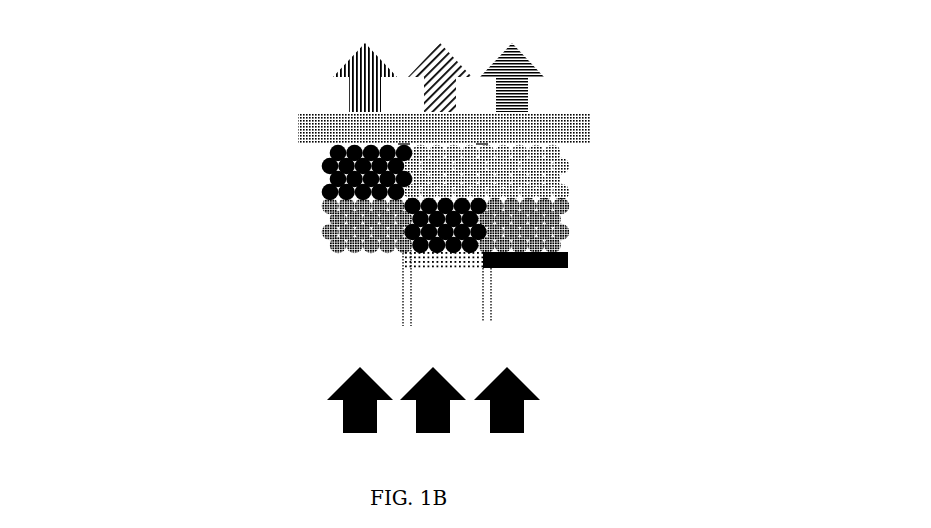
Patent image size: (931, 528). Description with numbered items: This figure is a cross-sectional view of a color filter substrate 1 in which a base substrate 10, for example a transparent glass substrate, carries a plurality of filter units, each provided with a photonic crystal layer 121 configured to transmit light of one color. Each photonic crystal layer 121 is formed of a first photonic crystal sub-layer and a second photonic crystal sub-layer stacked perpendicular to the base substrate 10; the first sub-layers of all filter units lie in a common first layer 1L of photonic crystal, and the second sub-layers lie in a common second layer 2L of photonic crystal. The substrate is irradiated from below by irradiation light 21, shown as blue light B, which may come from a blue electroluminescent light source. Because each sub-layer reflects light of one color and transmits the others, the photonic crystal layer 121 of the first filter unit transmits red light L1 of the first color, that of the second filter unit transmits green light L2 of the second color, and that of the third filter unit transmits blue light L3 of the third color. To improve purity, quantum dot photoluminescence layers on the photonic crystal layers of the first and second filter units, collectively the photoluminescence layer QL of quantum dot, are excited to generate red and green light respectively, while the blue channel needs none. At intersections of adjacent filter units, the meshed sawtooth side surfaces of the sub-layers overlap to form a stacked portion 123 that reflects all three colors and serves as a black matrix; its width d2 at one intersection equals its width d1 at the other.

The color filter substrate 1 is at (72, 225).
The base substrate 10 is at (475, 105).
The stacked portion 123 is at (404, 143).
The photonic crystal layer 121 is at (663, 150).
The width of stacked portion d1 is at (483, 315).
The width of stacked portion d2 is at (403, 318).
The first layer of photonic crystal 1L is at (276, 178).
The second layer of photonic crystal 2L is at (283, 231).
The photoluminescence layer of quantum dot QL is at (283, 262).
The irradiation light 21 is at (433, 414).
The blue light B is at (509, 460).
The light of the first color L1 is at (512, 63).
The light of the second color L2 is at (440, 63).
The light of the third color L3 is at (365, 63).